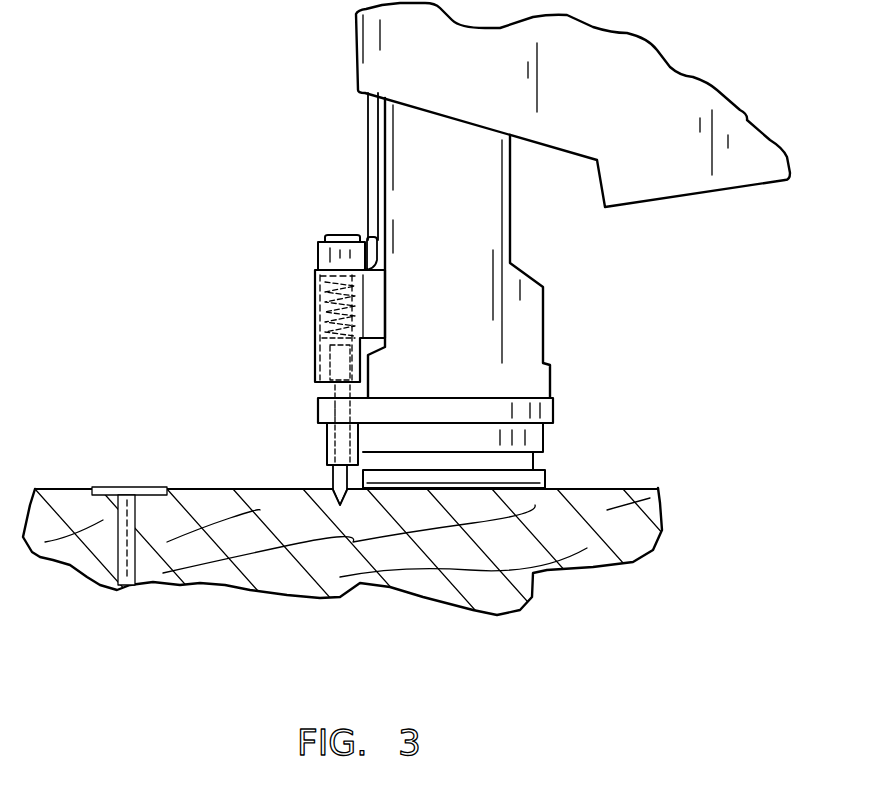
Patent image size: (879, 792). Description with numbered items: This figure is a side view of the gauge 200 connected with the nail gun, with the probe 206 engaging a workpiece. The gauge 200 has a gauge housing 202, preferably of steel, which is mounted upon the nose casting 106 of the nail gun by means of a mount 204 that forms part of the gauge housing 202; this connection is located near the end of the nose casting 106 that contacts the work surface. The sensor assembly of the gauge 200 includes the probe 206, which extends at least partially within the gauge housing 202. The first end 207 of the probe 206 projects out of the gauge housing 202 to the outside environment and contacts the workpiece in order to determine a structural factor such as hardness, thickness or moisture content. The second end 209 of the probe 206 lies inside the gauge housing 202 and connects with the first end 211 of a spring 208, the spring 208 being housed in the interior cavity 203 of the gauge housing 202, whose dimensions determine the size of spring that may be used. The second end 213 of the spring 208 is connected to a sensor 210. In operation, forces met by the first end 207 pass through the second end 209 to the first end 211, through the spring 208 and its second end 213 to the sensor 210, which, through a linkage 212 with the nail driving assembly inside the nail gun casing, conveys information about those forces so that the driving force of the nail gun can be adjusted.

The nose casting 106 is at (490, 237).
The gauge 200 is at (260, 285).
The gauge housing 202 is at (313, 327).
The interior cavity 203 is at (313, 350).
The mount 204 is at (363, 313).
The probe 206 is at (332, 480).
The first end of the probe 207 is at (338, 504).
The spring 208 is at (318, 272).
The second end of the probe 209 is at (338, 352).
The sensor 210 is at (350, 237).
The first end of the spring 211 is at (323, 321).
The linkage 212 is at (367, 132).
The second end of the spring 213 is at (343, 292).